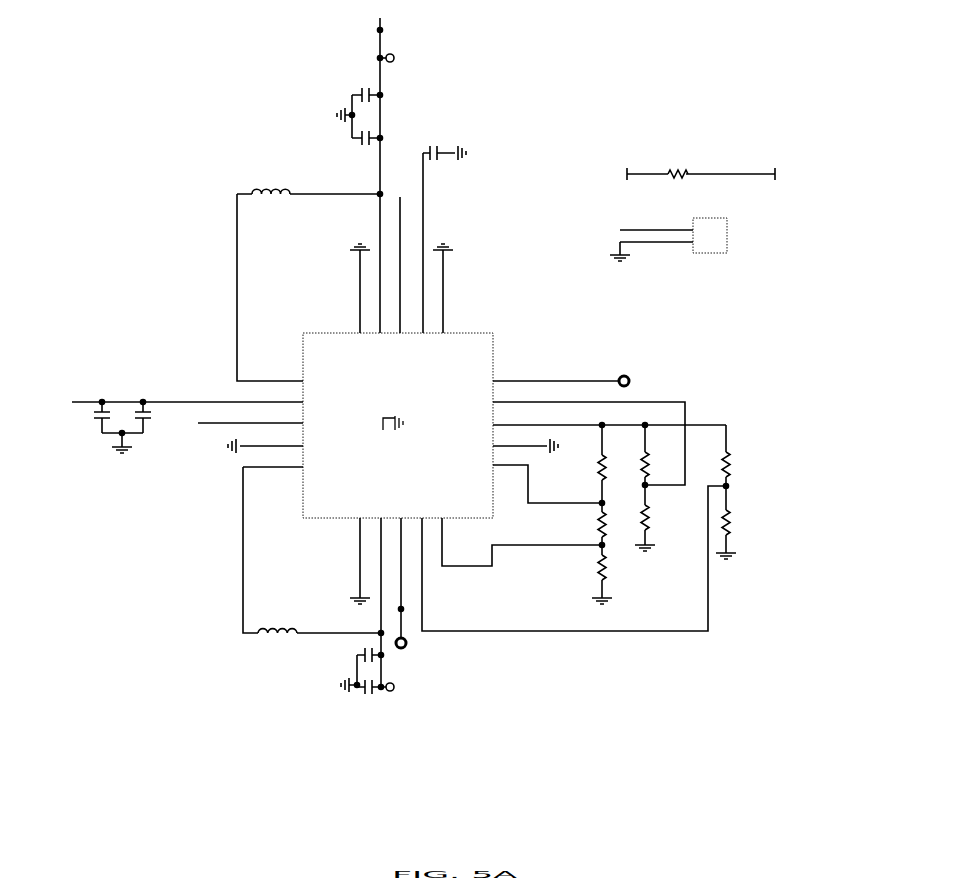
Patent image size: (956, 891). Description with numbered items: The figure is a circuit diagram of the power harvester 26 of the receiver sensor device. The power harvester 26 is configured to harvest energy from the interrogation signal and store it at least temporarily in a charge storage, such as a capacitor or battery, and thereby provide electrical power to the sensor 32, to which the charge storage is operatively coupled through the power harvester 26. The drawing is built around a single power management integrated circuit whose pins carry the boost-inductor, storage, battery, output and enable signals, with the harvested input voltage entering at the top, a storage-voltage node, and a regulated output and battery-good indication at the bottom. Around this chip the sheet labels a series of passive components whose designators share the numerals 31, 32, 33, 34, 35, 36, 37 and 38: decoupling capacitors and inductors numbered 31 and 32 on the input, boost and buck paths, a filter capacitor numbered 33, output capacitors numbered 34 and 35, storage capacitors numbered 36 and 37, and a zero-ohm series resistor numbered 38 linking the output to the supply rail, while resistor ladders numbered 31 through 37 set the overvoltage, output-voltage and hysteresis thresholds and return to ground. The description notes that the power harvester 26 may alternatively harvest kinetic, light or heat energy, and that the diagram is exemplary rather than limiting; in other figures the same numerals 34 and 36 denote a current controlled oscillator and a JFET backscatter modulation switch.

The power harvester 26 is at (628, 36).
The components C31, L31, R31, P31 31 is at (491, 365).
The sensor 32 is at (462, 325).
The components C33, R33 33 is at (524, 307).
The current controlled oscillator 34 is at (494, 592).
The components C35, R35 35 is at (494, 636).
The JFET backscatter modulation switch 36 is at (424, 439).
The components C37, R37 37 is at (442, 468).
The resistor R38 38 is at (678, 175).